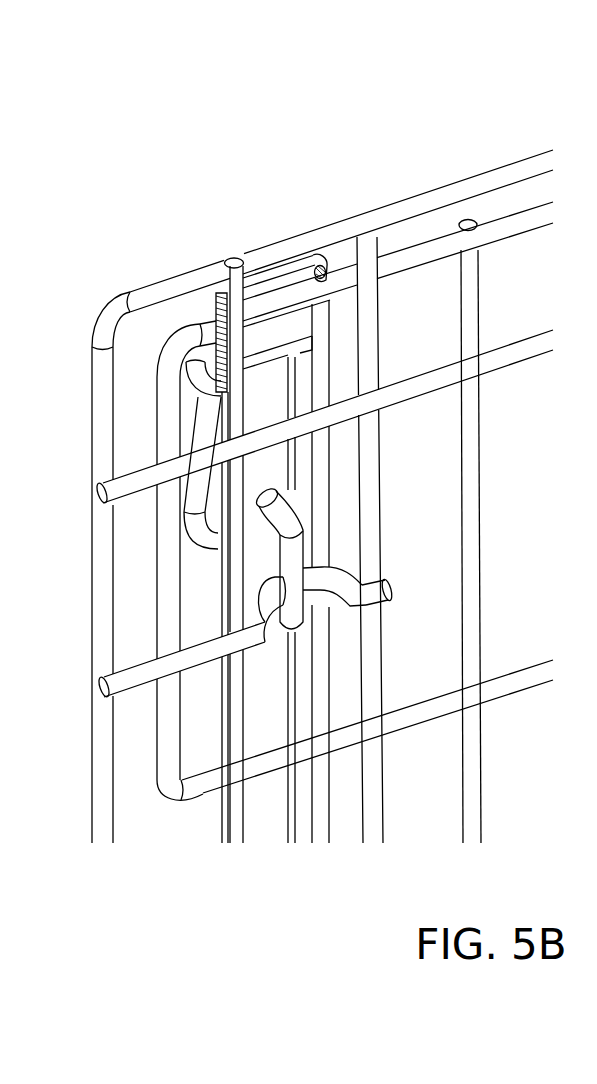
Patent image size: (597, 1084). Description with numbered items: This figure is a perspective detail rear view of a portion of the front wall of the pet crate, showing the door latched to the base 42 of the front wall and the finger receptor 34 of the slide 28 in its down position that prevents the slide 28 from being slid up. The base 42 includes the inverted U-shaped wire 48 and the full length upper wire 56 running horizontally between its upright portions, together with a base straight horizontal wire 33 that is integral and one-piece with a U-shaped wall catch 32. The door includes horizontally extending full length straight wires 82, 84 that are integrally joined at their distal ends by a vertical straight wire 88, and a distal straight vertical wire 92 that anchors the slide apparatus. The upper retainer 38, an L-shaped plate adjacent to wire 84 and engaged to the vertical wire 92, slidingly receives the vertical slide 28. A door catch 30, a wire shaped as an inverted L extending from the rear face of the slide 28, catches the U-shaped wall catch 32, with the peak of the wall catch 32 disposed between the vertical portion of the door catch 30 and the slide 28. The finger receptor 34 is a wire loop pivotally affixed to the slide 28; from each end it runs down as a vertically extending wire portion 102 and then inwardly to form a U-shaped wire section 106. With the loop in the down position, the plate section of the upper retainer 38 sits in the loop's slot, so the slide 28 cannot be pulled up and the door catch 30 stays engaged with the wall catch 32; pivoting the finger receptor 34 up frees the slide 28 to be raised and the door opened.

The slide 28 is at (245, 460).
The door catch 30 is at (305, 517).
The wall catch 32 is at (318, 586).
The base straight horizontal wire 33 is at (140, 688).
The finger receptor 34 is at (196, 412).
The upper retainer 38 is at (287, 272).
The base 42 is at (177, 280).
The inverted U-shaped wire 48 is at (92, 812).
The upper wire 56 is at (510, 340).
The horizontally extending full length straight wire 82 is at (518, 694).
The horizontally extending full length straight wire 84 is at (430, 243).
The vertical straight wire 88 is at (157, 538).
The distal straight vertical wire 92 is at (330, 793).
The vertically extending wire portion 102 is at (190, 373).
The U-shaped wire section 106 is at (200, 557).